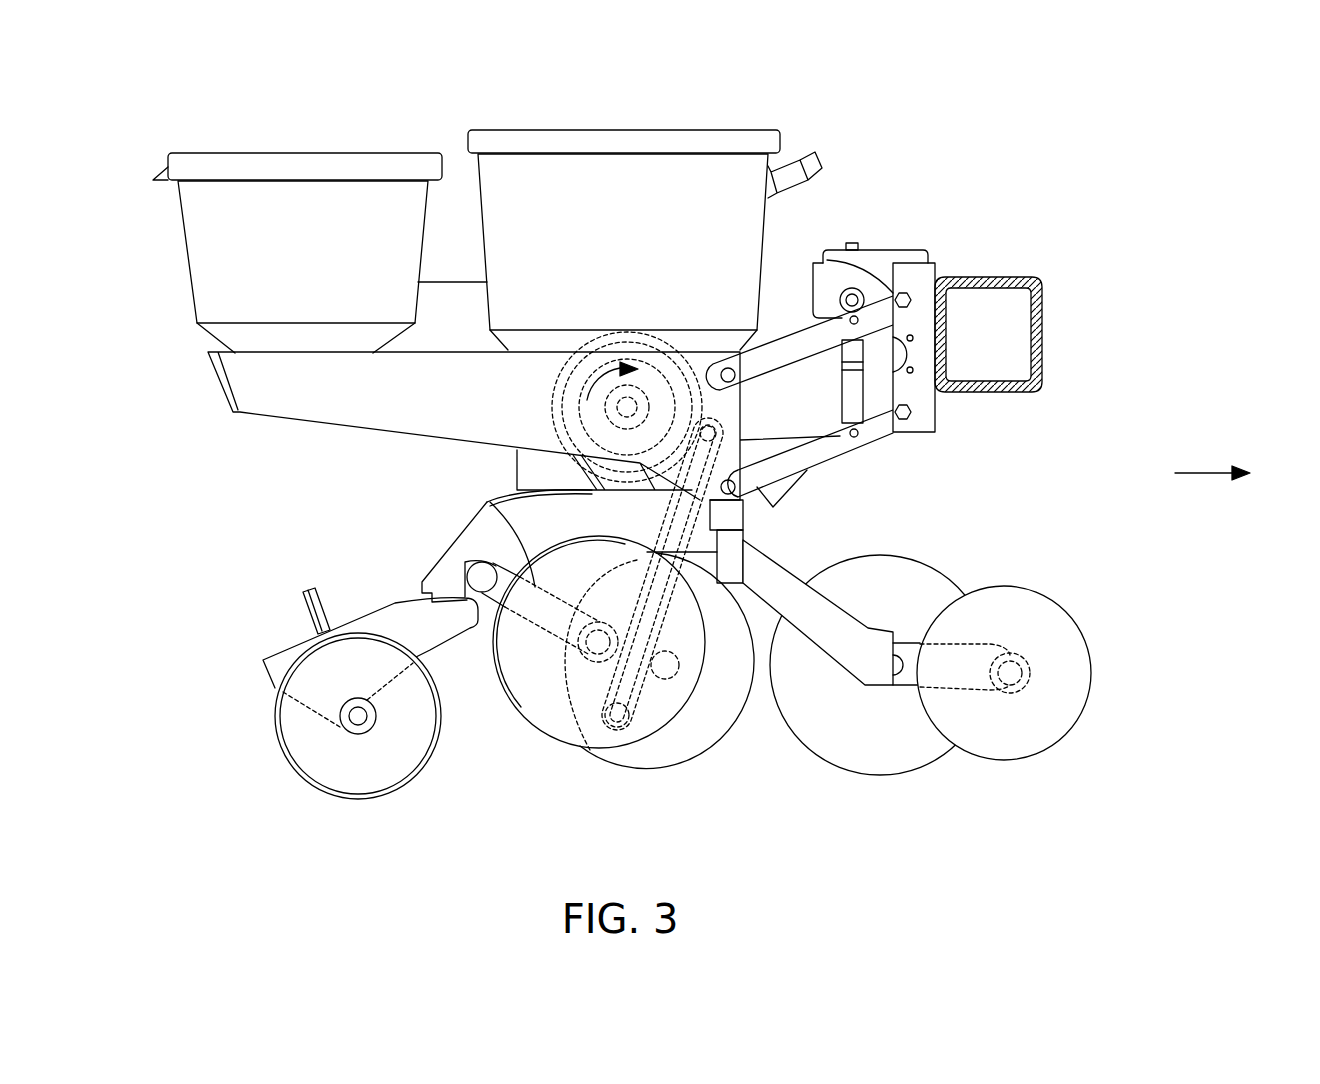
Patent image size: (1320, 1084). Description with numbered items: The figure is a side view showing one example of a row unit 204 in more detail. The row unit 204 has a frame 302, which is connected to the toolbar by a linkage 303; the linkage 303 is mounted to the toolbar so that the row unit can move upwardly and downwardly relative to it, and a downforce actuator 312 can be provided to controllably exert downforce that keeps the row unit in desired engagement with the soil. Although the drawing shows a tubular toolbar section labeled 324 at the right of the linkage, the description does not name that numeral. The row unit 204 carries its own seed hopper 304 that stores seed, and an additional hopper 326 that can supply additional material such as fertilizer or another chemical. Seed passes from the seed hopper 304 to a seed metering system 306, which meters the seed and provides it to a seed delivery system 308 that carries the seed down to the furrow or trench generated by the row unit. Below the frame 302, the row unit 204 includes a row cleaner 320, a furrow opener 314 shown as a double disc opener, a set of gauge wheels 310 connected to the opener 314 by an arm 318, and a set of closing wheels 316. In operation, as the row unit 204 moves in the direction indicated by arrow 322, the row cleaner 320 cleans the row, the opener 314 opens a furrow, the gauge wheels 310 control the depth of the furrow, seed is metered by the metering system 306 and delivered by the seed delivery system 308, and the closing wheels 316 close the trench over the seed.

The row unit 204 is at (988, 118).
The frame 302 is at (467, 551).
The linkage 303 is at (757, 329).
The seed hopper 304 is at (625, 128).
The seed metering system 306 is at (663, 343).
The seed delivery system 308 is at (725, 515).
The gauge wheels 310 is at (545, 718).
The downforce actuator 312 is at (903, 250).
The furrow opener 314 is at (705, 727).
The closing wheels 316 is at (302, 748).
The arm 318 is at (488, 502).
The row cleaner 320 is at (892, 760).
The arrow 322 is at (1212, 482).
The toolbar 324 is at (1043, 333).
The additional hopper 326 is at (280, 152).